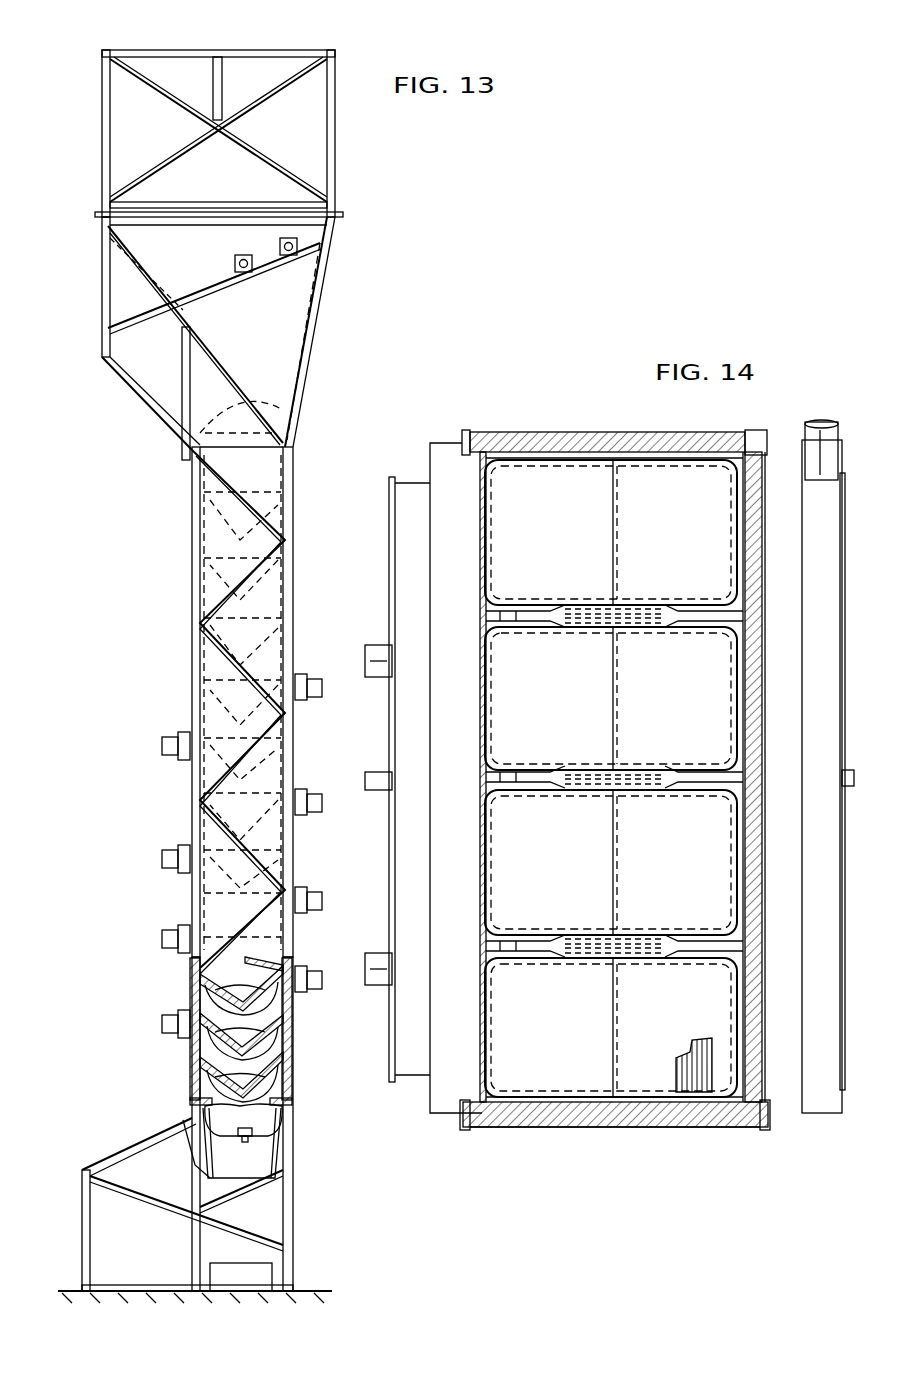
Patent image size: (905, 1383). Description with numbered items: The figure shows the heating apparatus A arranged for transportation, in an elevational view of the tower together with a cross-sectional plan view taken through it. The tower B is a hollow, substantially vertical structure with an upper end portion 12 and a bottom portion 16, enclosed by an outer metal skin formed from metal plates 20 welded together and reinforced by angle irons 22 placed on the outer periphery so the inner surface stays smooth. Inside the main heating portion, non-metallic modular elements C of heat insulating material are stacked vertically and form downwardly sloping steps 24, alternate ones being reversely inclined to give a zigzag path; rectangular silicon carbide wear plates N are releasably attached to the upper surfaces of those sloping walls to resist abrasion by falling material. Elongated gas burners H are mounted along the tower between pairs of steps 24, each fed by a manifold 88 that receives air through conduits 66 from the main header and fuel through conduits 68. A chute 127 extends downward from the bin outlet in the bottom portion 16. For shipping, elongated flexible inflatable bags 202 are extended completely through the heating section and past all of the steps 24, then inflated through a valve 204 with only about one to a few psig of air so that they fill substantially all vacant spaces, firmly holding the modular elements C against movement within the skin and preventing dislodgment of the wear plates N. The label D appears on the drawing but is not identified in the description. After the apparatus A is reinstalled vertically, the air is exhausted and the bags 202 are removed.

In FIG. 13, the upper end portion 12 is at (255, 68).
In FIG. 13, the metal plates 20 is at (130, 78).
In FIG. 14, the metal plates 20 is at (560, 432).
In FIG. 13, the angle irons 22 is at (106, 135).
In FIG. 14, the angle irons 22 is at (762, 430).
In FIG. 13, the steps 24 is at (200, 983).
In FIG. 13, the bottom portion 16 is at (262, 1158).
In FIG. 14, the conduits 66 is at (370, 645).
In FIG. 14, the conduits 68 is at (370, 790).
In FIG. 14, the manifold 88 is at (392, 480).
In FIG. 13, the chute 127 is at (265, 1273).
In FIG. 13, the inflatable bags 202 is at (200, 1073).
In FIG. 14, the inflatable bags 202 is at (492, 630).
In FIG. 13, the valve 204 is at (252, 1131).
In FIG. 13, the heating apparatus A is at (100, 348).
In FIG. 13, the tower B is at (302, 475).
In FIG. 14, the tower B is at (686, 1127).
In FIG. 13, the modular elements C is at (268, 655).
In FIG. 14, the modular elements C is at (752, 549).
In FIG. 13, the top frame D is at (302, 103).
In FIG. 13, the gas burners H is at (303, 783).
In FIG. 14, the gas burners H is at (437, 442).
In FIG. 13, the wear plates N is at (238, 988).
In FIG. 14, the wear plates N is at (718, 1074).